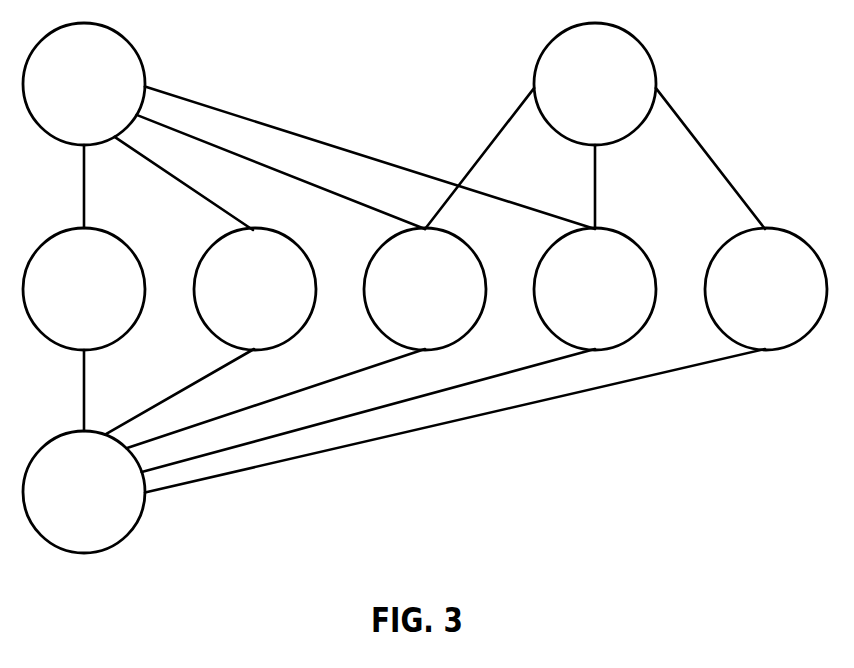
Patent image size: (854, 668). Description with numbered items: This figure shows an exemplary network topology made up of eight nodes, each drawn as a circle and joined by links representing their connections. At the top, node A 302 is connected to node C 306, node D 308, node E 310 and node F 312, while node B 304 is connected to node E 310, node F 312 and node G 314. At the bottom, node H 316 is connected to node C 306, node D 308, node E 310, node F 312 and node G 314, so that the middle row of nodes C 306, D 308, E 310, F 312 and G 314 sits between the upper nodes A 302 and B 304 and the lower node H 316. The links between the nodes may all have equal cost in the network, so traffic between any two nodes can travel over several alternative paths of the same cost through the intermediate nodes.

The node A 302 is at (84, 84).
The node B 304 is at (595, 84).
The node C 306 is at (84, 289).
The node D 308 is at (255, 289).
The node E 310 is at (425, 289).
The node F 312 is at (595, 289).
The node G 314 is at (766, 289).
The node H 316 is at (84, 492).